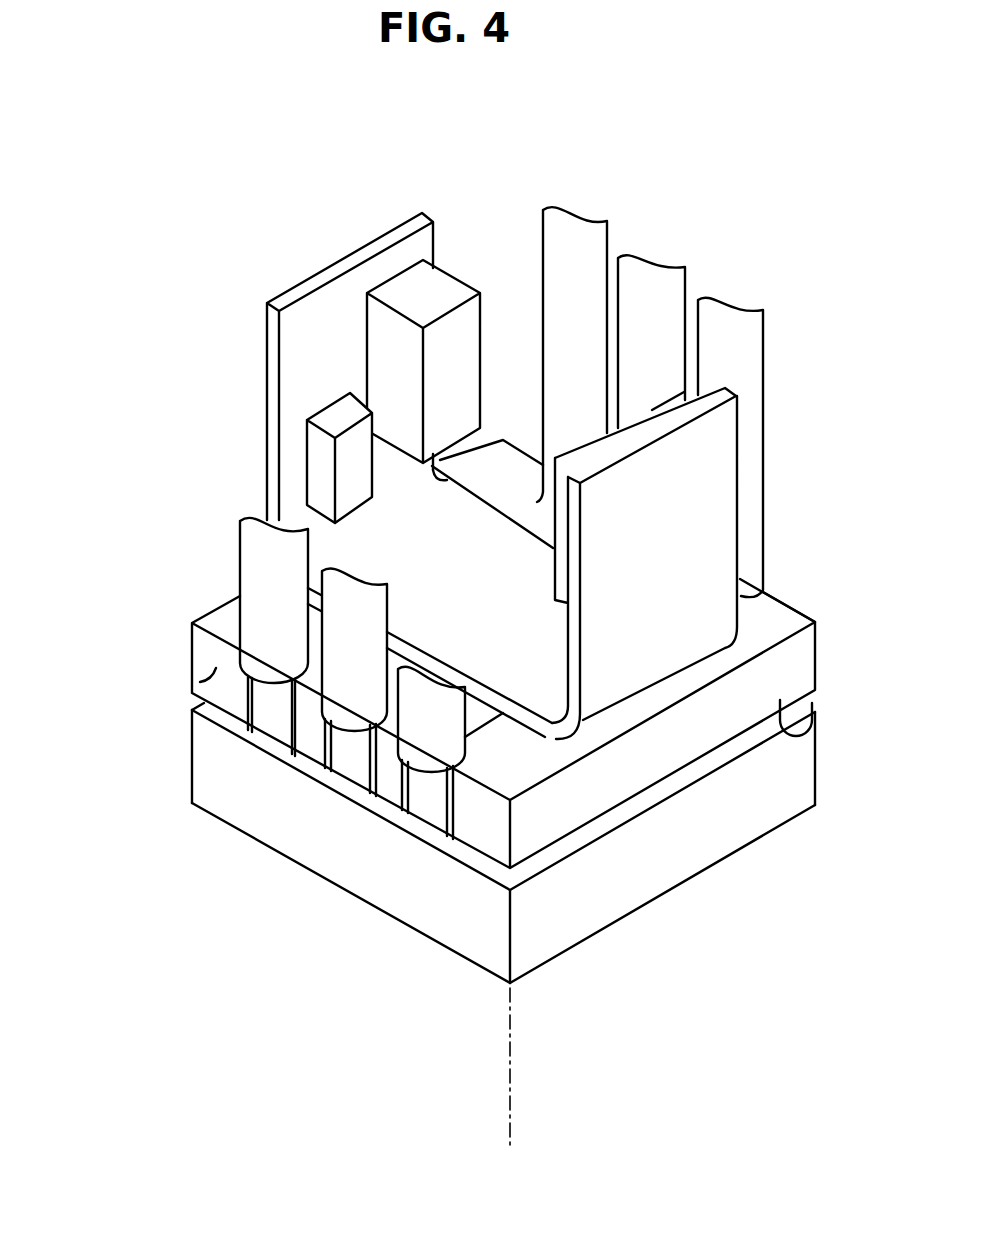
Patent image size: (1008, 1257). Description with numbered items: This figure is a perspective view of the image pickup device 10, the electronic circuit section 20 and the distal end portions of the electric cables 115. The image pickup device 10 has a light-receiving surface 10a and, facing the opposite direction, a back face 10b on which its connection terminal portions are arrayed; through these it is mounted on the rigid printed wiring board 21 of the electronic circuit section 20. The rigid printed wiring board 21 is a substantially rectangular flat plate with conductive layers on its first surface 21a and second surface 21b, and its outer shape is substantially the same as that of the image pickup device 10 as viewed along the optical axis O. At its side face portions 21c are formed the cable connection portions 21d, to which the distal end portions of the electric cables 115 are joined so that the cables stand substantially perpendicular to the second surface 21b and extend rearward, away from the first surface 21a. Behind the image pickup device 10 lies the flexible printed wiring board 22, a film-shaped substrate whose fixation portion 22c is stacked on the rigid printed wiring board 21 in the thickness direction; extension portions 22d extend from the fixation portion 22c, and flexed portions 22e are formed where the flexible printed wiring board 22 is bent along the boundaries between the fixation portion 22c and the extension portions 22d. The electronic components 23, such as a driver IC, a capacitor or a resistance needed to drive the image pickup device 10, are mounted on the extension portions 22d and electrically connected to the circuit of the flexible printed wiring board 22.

The electronic circuit section 20 is at (116, 281).
The image pickup device 10 is at (192, 753).
The light-receiving surface 10a is at (482, 968).
The back face 10b is at (473, 872).
The rigid printed wiring board 21 is at (190, 642).
The first surface 21a is at (815, 713).
The second surface 21b is at (776, 618).
The side face portions 21c is at (193, 680).
The cable connection portions 21d is at (243, 738).
The flexible printed wiring board 22 is at (267, 394).
The fixation portion 22c is at (480, 603).
The extension portions 22d is at (267, 345).
The flexed portions 22e is at (424, 488).
The electronic components 23 is at (343, 405).
The electric cables 115 is at (699, 297).
The optical axis O is at (508, 1115).